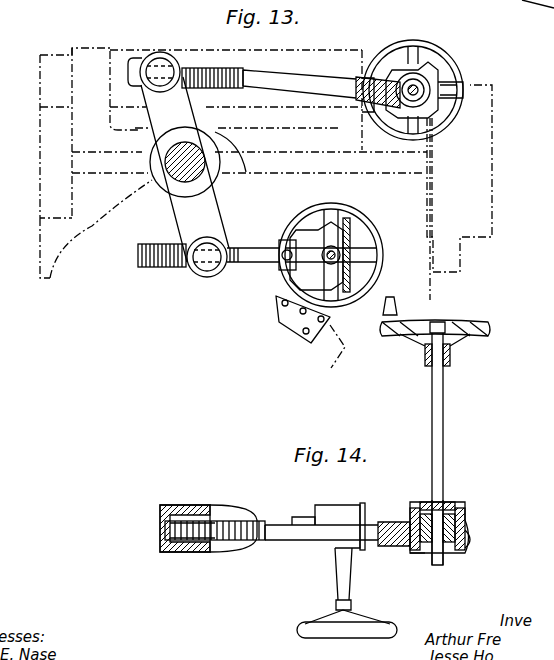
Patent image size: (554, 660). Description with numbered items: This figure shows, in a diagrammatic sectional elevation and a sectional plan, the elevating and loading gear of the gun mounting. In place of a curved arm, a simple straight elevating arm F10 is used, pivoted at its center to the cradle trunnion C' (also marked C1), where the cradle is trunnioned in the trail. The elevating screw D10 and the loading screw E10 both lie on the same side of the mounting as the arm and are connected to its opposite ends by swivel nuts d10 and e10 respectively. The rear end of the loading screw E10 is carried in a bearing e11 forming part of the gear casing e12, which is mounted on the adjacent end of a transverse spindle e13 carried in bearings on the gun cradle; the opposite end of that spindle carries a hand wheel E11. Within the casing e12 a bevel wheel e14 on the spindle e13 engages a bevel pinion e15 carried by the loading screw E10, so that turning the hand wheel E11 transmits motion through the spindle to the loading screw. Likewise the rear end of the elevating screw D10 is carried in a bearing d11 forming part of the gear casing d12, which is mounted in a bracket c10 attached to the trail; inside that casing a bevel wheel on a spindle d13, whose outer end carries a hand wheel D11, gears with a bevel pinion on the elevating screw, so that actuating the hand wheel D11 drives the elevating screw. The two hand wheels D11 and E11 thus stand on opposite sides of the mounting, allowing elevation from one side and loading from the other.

In FIG. 13, the swivel nut e10 is at (160, 62).
In FIG. 14, the swivel nut e10 is at (196, 548).
In FIG. 13, the elevating arm F10 is at (170, 90).
In FIG. 14, the elevating arm F10 is at (188, 512).
In FIG. 13, the loading screw E10 is at (288, 80).
In FIG. 14, the loading screw E10 is at (296, 538).
In FIG. 13, the bearing e11 is at (378, 80).
In FIG. 14, the bearing e11 is at (396, 546).
In FIG. 13, the gear casing e12 is at (420, 82).
In FIG. 14, the gear casing e12 is at (456, 514).
In FIG. 13, the transverse spindle e13 is at (430, 88).
In FIG. 14, the transverse spindle e13 is at (437, 532).
In FIG. 13, the bevel wheel e14 is at (465, 90).
In FIG. 14, the bevel wheel e14 is at (468, 540).
In FIG. 13, the bevel pinion e15 is at (385, 106).
In FIG. 14, the bevel pinion e15 is at (412, 552).
In FIG. 13, the hand wheel E11 is at (436, 138).
In FIG. 13, the trunnion C1 is at (165, 178).
In FIG. 13, the trunnion C' is at (129, 220).
In FIG. 13, the elevating screw D10 is at (162, 268).
In FIG. 14, the elevating screw D10 is at (262, 518).
In FIG. 13, the swivel nut d10 is at (209, 262).
In FIG. 13, the bearing d11 is at (296, 228).
In FIG. 14, the bearing d11 is at (305, 516).
In FIG. 13, the hand wheel D11 is at (378, 240).
In FIG. 14, the hand wheel D11 is at (370, 625).
In FIG. 13, the gear casing d12 is at (350, 274).
In FIG. 14, the gear casing d12 is at (345, 513).
In FIG. 13, the spindle d13 is at (335, 252).
In FIG. 13, the bracket c10 is at (279, 312).